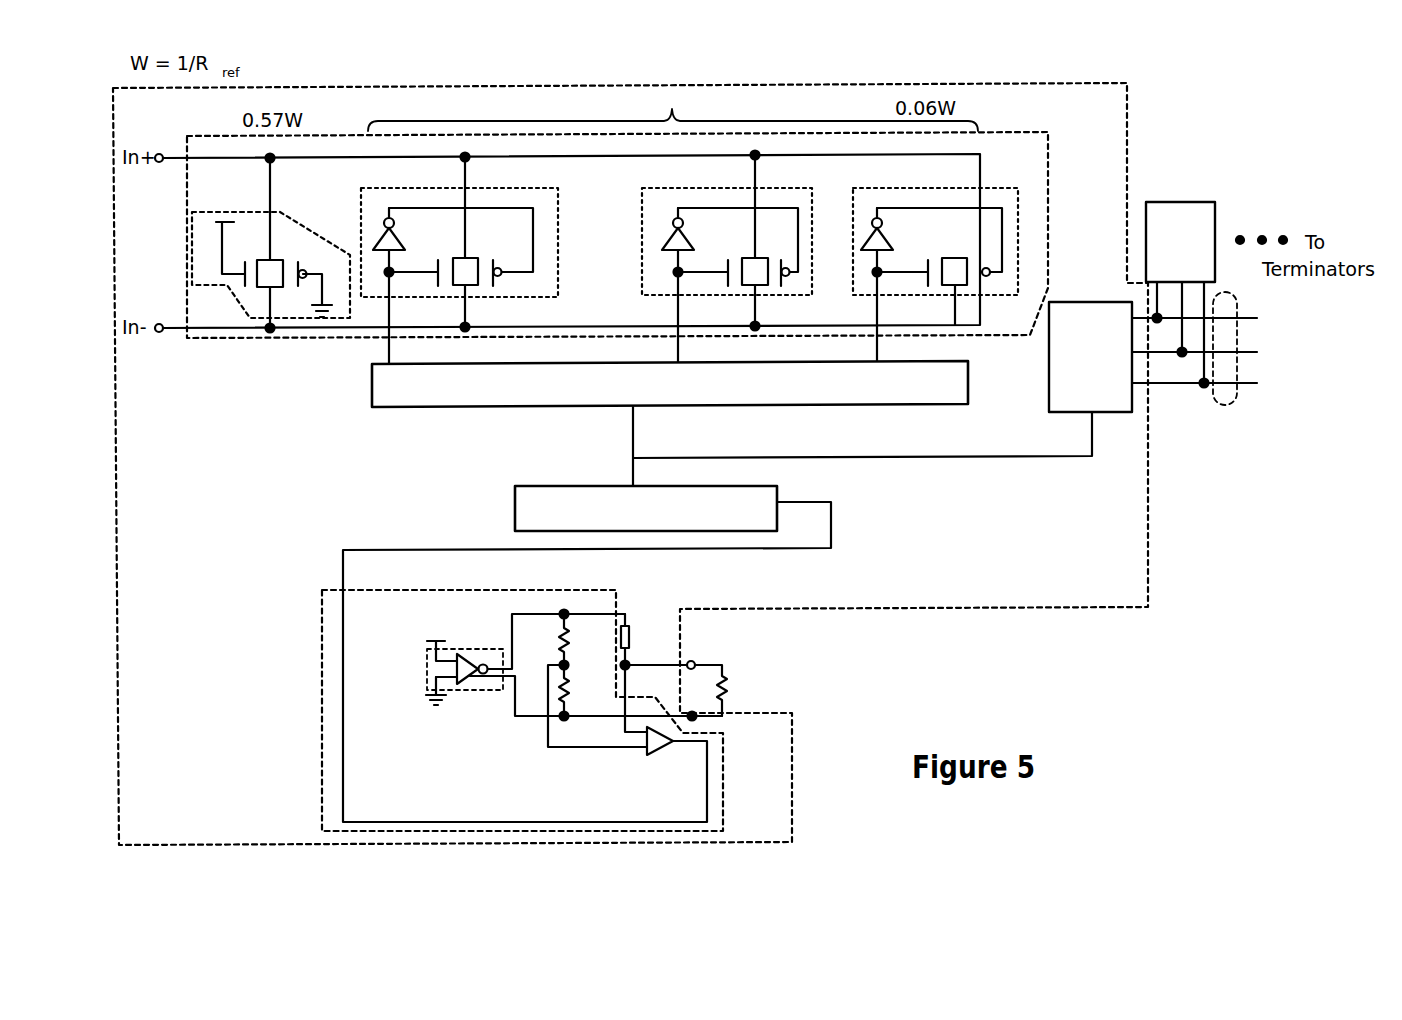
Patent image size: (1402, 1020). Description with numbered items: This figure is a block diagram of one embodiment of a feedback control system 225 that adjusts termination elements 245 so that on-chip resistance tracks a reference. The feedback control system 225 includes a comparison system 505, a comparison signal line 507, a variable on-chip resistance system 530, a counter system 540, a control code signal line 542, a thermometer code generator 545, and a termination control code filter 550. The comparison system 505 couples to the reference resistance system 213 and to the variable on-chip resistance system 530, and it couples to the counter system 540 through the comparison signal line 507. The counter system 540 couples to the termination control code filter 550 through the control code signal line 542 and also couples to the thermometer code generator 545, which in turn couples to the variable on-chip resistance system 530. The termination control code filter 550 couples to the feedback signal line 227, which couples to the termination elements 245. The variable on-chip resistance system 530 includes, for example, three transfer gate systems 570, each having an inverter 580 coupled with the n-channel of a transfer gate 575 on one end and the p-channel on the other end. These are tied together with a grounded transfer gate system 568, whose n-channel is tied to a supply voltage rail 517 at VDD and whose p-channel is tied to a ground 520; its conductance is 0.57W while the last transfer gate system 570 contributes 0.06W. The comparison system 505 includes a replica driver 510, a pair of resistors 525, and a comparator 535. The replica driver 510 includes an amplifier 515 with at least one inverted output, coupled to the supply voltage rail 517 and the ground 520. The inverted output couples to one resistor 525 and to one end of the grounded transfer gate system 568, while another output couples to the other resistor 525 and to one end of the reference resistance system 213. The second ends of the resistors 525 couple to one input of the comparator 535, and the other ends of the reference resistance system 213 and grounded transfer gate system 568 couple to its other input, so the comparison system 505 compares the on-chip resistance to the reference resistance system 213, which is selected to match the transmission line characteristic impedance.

The reference resistance system 213 is at (722, 665).
The feedback control system 225 is at (229, 845).
The feedback signal line 227 is at (1238, 391).
The termination elements 245 is at (1215, 230).
The comparison system 505 is at (322, 669).
The comparison signal line 507 is at (831, 535).
The replica driver 510 is at (486, 692).
The amplifier 515 is at (470, 650).
The supply voltage rail 517 is at (217, 223).
The ground 520 is at (318, 319).
The resistors 525 is at (582, 679).
The variable on-chip resistance system 530 is at (1013, 132).
The comparator 535 is at (660, 751).
The counter system 540 is at (515, 522).
The control code signal line 542 is at (958, 458).
The thermometer code generator 545 is at (372, 400).
The termination control code filter 550 is at (1049, 378).
The grounded transfer gate system 568 is at (192, 263).
The transfer gate system 570 is at (558, 224).
The transfer gate 575 is at (256, 287).
The inverter 580 is at (377, 243).